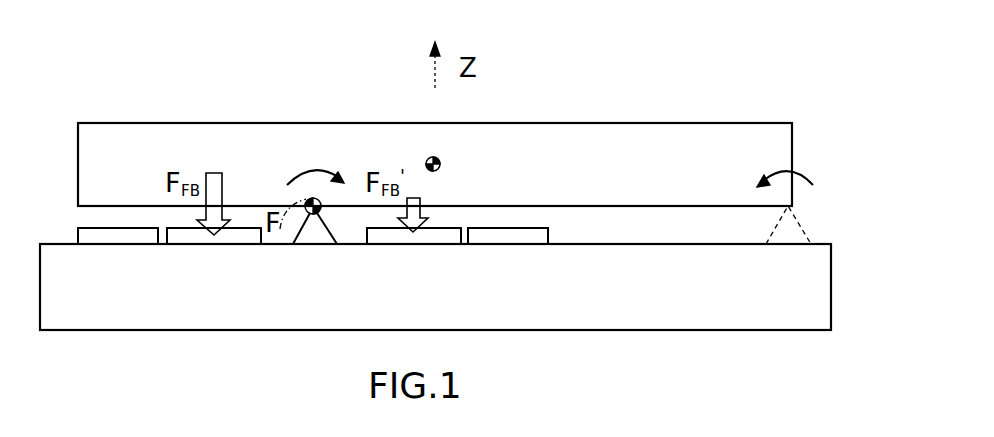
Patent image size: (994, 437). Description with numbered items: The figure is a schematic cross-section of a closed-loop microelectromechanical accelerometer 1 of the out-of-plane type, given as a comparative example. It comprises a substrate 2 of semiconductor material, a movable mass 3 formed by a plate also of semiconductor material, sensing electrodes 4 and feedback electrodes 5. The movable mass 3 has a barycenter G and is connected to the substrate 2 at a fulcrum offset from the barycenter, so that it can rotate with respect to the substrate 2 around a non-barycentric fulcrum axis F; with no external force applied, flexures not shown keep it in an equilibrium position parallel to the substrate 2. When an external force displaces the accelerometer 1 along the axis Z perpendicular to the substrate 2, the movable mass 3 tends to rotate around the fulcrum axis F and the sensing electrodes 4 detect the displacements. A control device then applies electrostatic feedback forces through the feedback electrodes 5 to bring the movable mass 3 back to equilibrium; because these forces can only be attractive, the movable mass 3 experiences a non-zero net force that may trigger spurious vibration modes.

The closed-loop microelectromechanical accelerometer 1 is at (693, 42).
The substrate 2 is at (623, 315).
The movable mass 3 is at (178, 123).
The sensing electrodes 4 is at (108, 228).
The feedback electrodes 5 is at (448, 230).